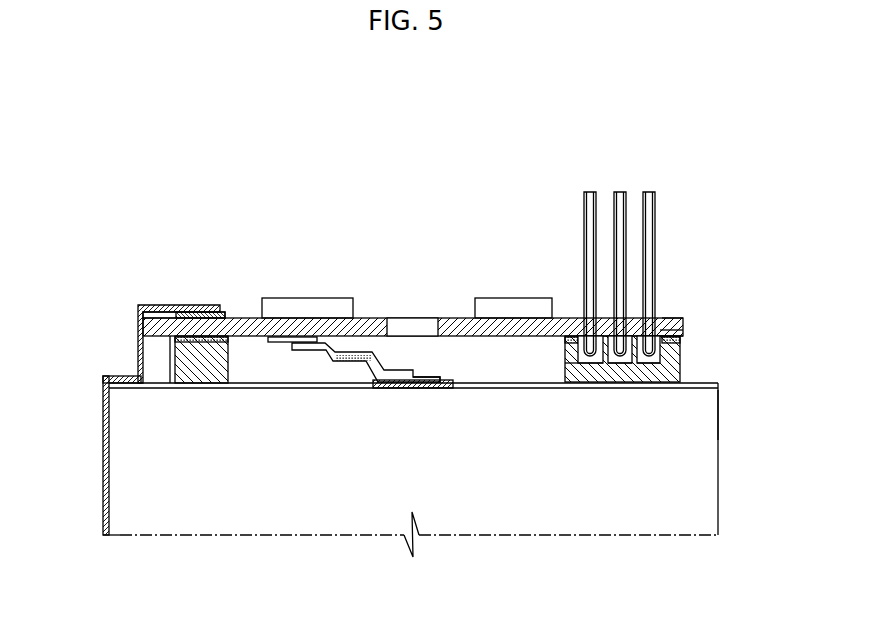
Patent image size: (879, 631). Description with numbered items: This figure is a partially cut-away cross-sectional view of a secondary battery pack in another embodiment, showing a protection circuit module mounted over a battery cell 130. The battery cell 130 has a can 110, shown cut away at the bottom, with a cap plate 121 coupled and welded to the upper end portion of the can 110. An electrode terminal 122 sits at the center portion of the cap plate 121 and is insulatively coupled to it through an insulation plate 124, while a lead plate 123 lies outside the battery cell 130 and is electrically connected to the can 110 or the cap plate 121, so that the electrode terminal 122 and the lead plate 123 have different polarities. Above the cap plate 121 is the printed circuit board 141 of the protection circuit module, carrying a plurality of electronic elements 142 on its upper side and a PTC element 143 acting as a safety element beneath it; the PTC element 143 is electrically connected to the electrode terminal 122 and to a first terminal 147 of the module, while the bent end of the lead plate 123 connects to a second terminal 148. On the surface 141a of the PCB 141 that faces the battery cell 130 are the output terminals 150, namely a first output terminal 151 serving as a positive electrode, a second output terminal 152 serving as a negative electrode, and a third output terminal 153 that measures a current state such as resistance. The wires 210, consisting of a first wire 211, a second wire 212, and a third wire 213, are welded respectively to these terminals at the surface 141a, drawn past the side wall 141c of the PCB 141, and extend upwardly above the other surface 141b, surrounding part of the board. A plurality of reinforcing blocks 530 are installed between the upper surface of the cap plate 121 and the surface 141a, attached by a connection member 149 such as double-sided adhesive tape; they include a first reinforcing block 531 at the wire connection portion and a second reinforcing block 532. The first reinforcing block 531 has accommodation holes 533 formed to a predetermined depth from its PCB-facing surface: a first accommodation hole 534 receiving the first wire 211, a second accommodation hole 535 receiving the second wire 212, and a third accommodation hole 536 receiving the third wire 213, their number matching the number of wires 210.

The can 110 is at (432, 465).
The cap plate 121 is at (112, 376).
The electrode terminal 122 is at (428, 375).
The lead plate 123 is at (103, 468).
The insulation plate 124 is at (427, 389).
The battery cell 130 is at (737, 416).
The printed circuit board 141 is at (212, 208).
The surface of the PCB 141a is at (141, 355).
The other surface of the PCB 141b is at (230, 318).
The side wall of the PCB 141c is at (160, 322).
The electronic elements 142 is at (307, 298).
The PTC element 143 is at (386, 348).
The first terminal 147 is at (282, 343).
The second terminal 148 is at (172, 340).
The connection member 149 is at (224, 343).
The output terminals 150 is at (760, 240).
The first output terminal 151 is at (662, 318).
The second output terminal 152 is at (668, 338).
The third output terminal 153 is at (660, 330).
The wires 210 is at (672, 113).
The first wire 211 is at (586, 192).
The second wire 212 is at (652, 192).
The third wire 213 is at (621, 192).
The reinforcing blocks 530 is at (690, 352).
The first reinforcing block 531 is at (574, 378).
The second reinforcing block 532 is at (197, 368).
The accommodation holes 533 is at (675, 475).
The first accommodation hole 534 is at (592, 373).
The second accommodation hole 535 is at (659, 373).
The third accommodation hole 536 is at (628, 373).